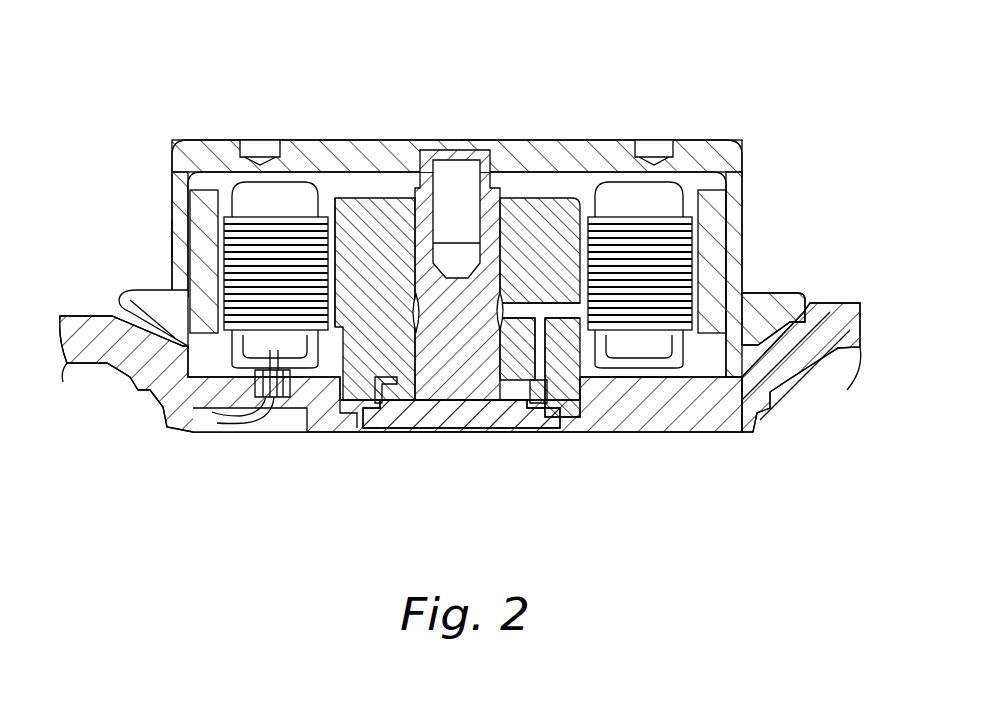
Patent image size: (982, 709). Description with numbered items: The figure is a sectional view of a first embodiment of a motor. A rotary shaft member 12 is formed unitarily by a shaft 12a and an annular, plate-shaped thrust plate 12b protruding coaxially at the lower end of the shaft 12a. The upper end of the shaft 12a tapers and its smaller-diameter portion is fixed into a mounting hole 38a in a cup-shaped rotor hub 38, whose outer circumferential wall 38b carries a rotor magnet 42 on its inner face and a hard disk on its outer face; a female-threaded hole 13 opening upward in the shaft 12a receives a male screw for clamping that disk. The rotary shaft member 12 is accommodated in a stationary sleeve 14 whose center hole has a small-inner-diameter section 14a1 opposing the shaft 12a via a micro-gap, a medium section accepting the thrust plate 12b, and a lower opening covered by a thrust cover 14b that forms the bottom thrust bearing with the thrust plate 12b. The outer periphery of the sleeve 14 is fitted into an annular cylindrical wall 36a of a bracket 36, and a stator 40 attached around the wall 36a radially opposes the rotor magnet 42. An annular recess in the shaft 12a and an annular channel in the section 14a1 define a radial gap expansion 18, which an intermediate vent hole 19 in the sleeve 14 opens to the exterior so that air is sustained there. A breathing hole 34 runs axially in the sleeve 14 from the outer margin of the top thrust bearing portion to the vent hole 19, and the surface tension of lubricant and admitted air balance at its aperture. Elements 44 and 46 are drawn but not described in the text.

The rotary shaft member 12 is at (418, 138).
The shaft 12a is at (412, 252).
The thrust plate 12b is at (422, 430).
The female-threaded hole 13 is at (450, 140).
The sleeve 14 is at (588, 195).
The small-inner-diameter section 14a1 is at (340, 196).
The thrust cover 14b is at (498, 430).
The radial gap expansion 18 is at (520, 196).
The intermediate vent hole 19 is at (535, 302).
The breathing hole 34 is at (603, 430).
The bracket 36 is at (830, 298).
The annular cylindrical wall 36a is at (635, 430).
The rotor hub 38 is at (695, 140).
The mounting hole 38a is at (470, 140).
The outer circumferential wall 38b is at (173, 238).
The stator 40 is at (253, 223).
The rotor magnet 42 is at (203, 203).
The seal 44 is at (748, 432).
The flange 46 is at (753, 323).